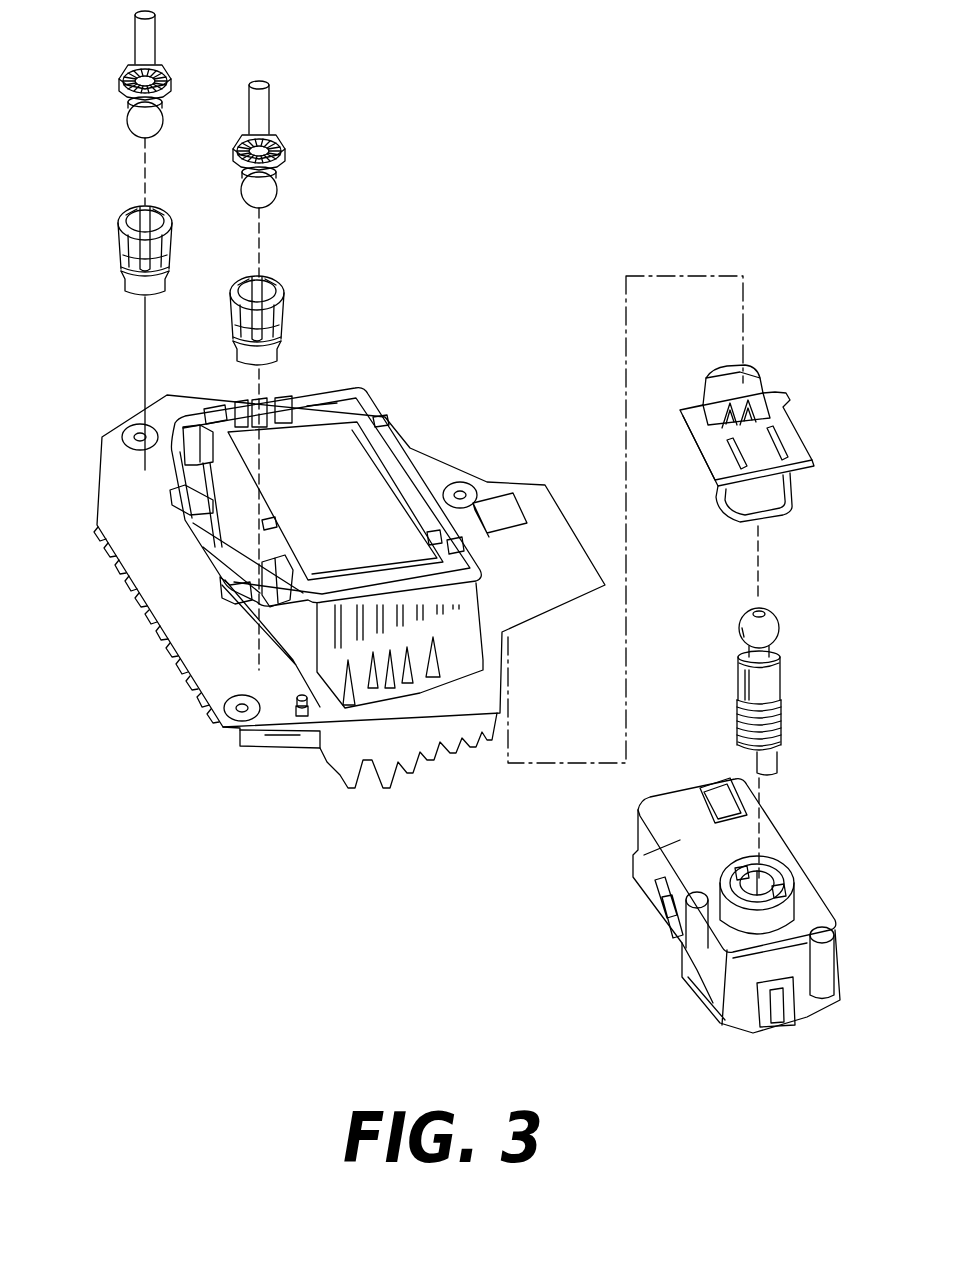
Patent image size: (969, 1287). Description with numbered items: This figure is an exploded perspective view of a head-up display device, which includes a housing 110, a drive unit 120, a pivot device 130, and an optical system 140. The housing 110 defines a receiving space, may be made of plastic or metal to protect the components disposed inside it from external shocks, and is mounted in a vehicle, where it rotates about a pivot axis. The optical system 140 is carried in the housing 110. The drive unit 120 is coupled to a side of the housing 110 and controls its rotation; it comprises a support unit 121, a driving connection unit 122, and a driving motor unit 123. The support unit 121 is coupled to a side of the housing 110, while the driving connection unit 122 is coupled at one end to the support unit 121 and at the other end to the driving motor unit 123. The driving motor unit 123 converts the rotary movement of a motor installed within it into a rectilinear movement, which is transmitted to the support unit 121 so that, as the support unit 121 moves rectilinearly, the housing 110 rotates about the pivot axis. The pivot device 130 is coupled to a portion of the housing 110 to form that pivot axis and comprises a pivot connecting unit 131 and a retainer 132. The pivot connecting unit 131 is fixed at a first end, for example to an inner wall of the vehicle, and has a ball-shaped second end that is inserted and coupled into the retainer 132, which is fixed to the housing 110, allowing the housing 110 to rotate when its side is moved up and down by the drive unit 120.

The housing 110 is at (138, 639).
The drive unit 120 is at (782, 348).
The support unit 121 is at (795, 438).
The driving connection unit 122 is at (773, 680).
The driving motor unit 123 is at (653, 877).
The pivot device 130 is at (317, 90).
The pivot connecting unit 131 is at (287, 160).
The retainer 132 is at (286, 304).
The optical system 140 is at (332, 447).